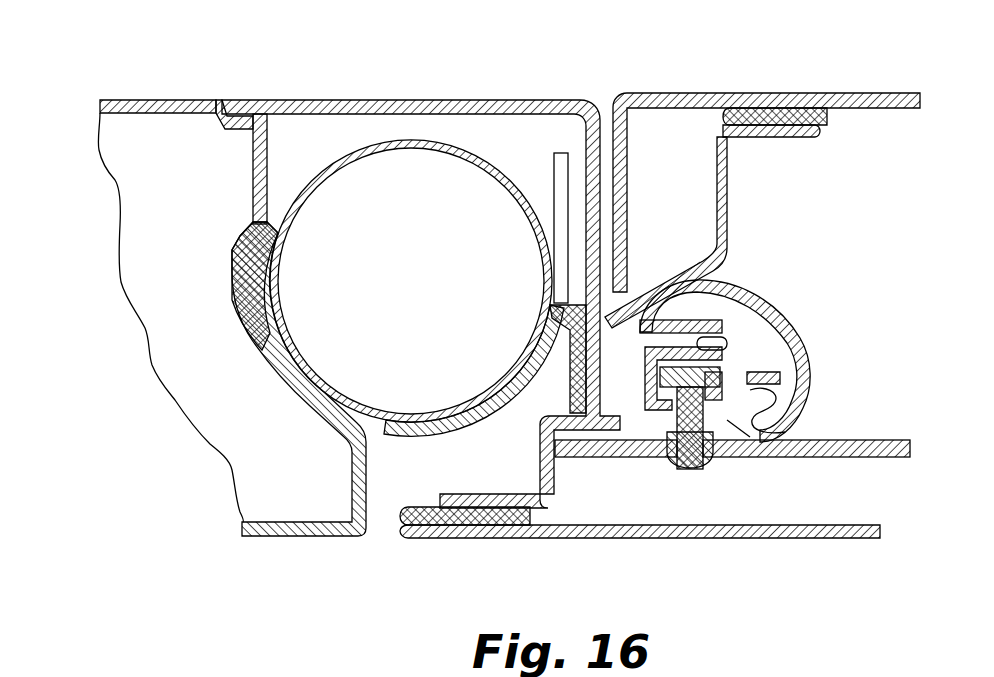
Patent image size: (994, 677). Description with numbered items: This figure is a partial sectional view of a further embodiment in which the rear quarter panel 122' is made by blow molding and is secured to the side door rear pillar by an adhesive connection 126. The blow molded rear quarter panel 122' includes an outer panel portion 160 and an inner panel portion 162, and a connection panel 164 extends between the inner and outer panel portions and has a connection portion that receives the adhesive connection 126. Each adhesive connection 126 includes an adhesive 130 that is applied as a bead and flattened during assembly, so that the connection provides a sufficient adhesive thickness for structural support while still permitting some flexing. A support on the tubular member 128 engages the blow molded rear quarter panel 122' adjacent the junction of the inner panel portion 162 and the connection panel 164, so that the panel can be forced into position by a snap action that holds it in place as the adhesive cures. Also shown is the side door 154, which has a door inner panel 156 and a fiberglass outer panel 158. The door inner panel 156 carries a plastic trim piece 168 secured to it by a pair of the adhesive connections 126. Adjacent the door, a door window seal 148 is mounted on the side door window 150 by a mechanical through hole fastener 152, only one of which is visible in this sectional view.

The rear quarter panel 122' is at (294, 571).
The adhesive connection 126 is at (232, 265).
The tubular member 128 is at (265, 363).
The adhesive 130 is at (820, 112).
The door window seal 148 is at (808, 348).
The side door window 150 is at (847, 440).
The mechanical through hole fastener 152 is at (690, 470).
The side door 154 is at (888, 540).
The door inner panel 156 is at (728, 262).
The fiberglass outer panel 158 is at (715, 540).
The outer panel portion 160 is at (135, 100).
The inner panel portion 162 is at (257, 537).
The connection panel 164 is at (280, 156).
The plastic trim piece 168 is at (677, 95).